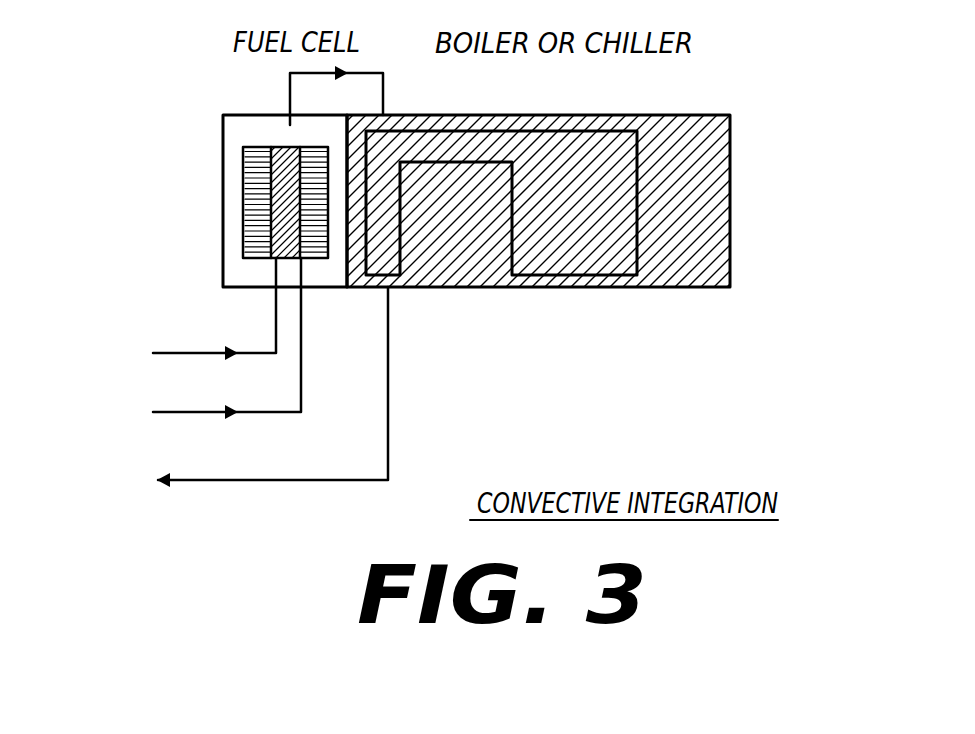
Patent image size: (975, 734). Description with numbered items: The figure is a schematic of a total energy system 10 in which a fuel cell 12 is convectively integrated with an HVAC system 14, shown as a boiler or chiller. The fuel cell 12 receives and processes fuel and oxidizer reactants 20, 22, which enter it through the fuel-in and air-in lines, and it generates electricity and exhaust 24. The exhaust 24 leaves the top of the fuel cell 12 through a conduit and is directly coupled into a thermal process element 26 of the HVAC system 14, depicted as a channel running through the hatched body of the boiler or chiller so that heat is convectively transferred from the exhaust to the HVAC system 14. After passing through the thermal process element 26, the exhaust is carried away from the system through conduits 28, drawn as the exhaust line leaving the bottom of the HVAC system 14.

The total energy system 10 is at (763, 92).
The fuel cell 12 is at (223, 178).
The HVAC system 14 is at (649, 289).
The fuel reactant 20 is at (178, 353).
The oxidizer reactant 22 is at (192, 412).
The exhaust 24 is at (290, 86).
The thermal process element 26 is at (541, 289).
The conduits 28 is at (389, 405).